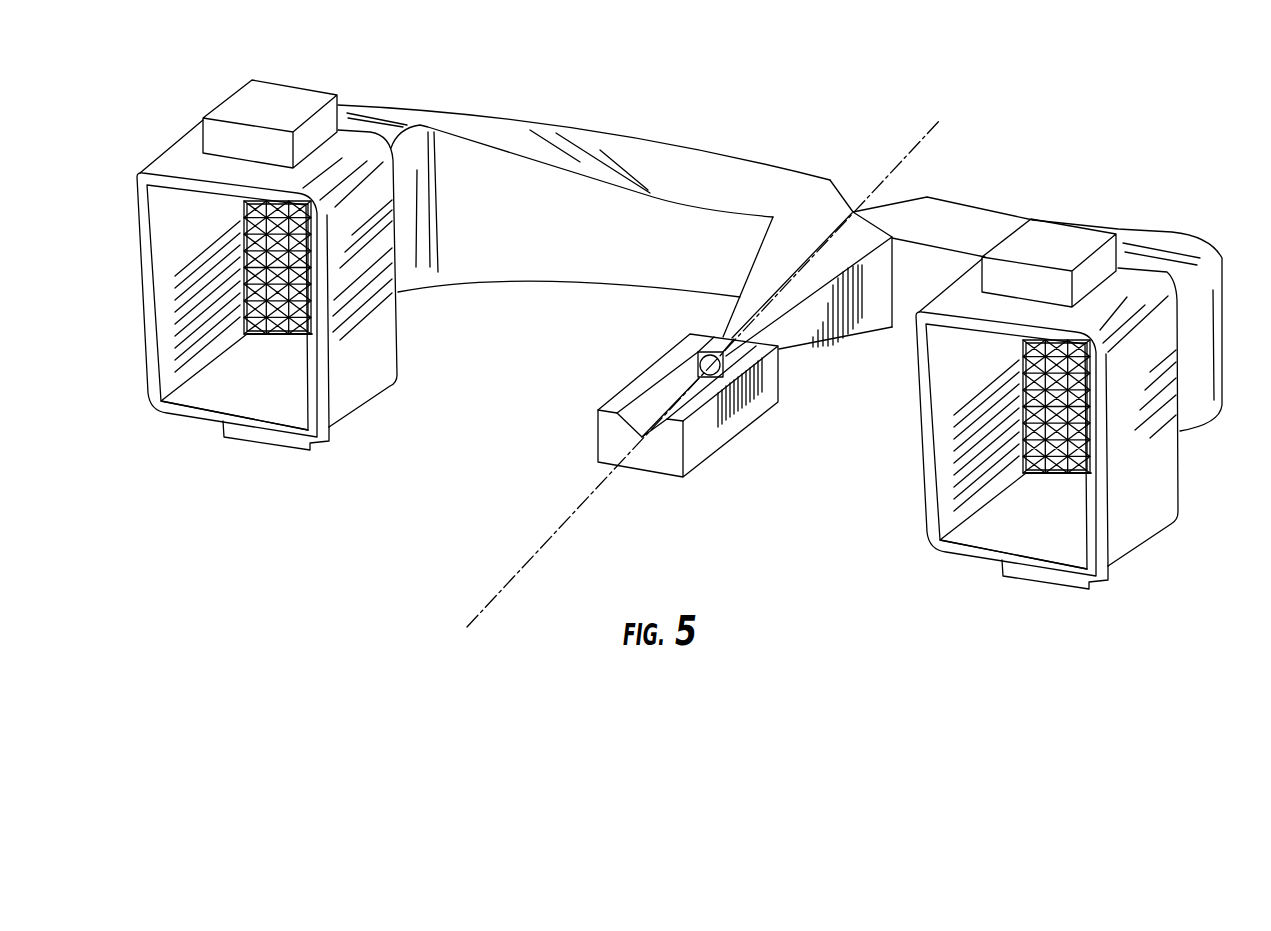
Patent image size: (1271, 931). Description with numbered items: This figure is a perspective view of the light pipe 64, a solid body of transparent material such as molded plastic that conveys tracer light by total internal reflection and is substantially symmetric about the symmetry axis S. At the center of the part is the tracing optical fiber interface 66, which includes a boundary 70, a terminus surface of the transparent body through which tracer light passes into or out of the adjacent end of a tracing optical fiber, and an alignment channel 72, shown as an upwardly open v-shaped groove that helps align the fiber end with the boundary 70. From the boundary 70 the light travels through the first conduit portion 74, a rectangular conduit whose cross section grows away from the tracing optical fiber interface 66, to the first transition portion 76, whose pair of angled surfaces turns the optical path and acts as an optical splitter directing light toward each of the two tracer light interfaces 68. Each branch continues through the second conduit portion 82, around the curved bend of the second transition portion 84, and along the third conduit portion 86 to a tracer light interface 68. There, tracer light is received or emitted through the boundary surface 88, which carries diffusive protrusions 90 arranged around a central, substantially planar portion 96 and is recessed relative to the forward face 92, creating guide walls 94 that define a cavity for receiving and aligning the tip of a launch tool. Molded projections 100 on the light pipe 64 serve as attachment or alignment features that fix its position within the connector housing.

The light pipe 64 is at (450, 85).
The tracing optical fiber interface 66 is at (700, 443).
The tracer light interface 68 is at (147, 268).
The boundary 70 is at (690, 360).
The alignment channel 72 is at (640, 412).
The first conduit portion 74 is at (790, 340).
The first transition portion 76 is at (857, 175).
The second conduit portion 82 is at (643, 163).
The second transition portion 84 is at (368, 106).
The third conduit portion 86 is at (410, 293).
The boundary surface 88 is at (240, 331).
The diffusive protrusions 90 is at (242, 223).
The forward face 92 is at (185, 417).
The guide walls 94 is at (278, 387).
The central substantially planar portion 96 is at (290, 253).
The projections 100 is at (247, 104).
The symmetry axis S is at (712, 357).